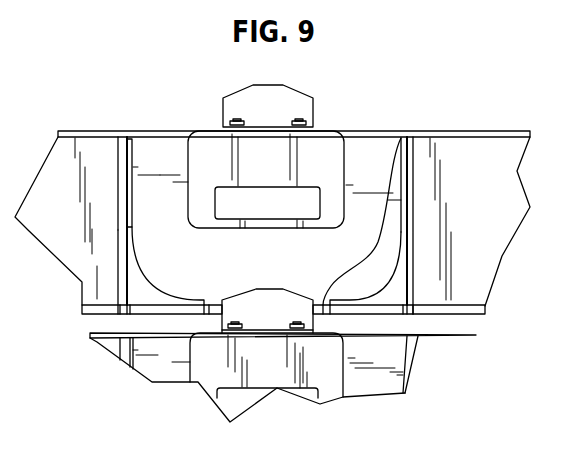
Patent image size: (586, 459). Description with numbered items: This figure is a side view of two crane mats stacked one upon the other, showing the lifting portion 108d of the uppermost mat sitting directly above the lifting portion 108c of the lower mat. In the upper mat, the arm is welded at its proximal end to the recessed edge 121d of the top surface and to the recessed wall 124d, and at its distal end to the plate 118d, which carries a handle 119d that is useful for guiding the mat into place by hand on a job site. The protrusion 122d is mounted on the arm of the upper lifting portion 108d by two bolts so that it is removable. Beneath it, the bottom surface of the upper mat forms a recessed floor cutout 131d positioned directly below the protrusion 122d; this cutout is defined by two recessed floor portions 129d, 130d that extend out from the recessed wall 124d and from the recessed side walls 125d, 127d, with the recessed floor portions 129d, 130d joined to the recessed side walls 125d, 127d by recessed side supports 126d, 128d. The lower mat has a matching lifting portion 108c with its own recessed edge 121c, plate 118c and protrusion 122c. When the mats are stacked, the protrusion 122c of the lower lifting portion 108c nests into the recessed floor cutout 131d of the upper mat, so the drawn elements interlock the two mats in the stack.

The lifting portion 108d is at (86, 101).
The recessed edge 121d is at (147, 135).
The recessed wall 124d is at (178, 157).
The handle 119d is at (228, 186).
The protrusion 122d is at (296, 104).
The plate 118d is at (326, 142).
The recessed floor cutout 131d is at (401, 138).
The recessed side wall 127d is at (415, 212).
The recessed side support 128d is at (403, 284).
The recessed floor portion 130d is at (388, 307).
The recessed floor portion 129d is at (147, 308).
The recessed side support 126d is at (130, 288).
The recessed side wall 125d is at (120, 239).
The recessed edge 121c is at (375, 335).
The plate 118c is at (335, 380).
The protrusion 122c is at (218, 319).
The lifting portion 108c is at (181, 403).